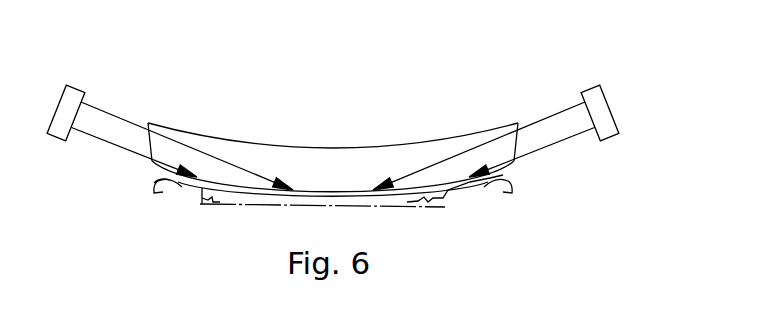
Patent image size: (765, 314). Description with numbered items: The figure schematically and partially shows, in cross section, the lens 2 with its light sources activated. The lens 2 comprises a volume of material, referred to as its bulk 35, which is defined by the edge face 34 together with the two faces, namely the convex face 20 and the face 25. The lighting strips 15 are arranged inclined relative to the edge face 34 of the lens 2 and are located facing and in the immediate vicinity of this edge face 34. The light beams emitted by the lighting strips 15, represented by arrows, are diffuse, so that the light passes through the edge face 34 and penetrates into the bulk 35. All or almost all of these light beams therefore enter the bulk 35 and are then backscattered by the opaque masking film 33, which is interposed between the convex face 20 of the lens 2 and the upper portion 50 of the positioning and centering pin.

The lens 2 is at (356, 128).
The lighting strips 15 is at (70, 103).
The convex face 20 is at (153, 166).
The face 25 is at (229, 141).
The opaque masking film 33 is at (501, 178).
The edge face 34 is at (518, 157).
The bulk 35 is at (330, 163).
The upper portion 50 is at (200, 204).